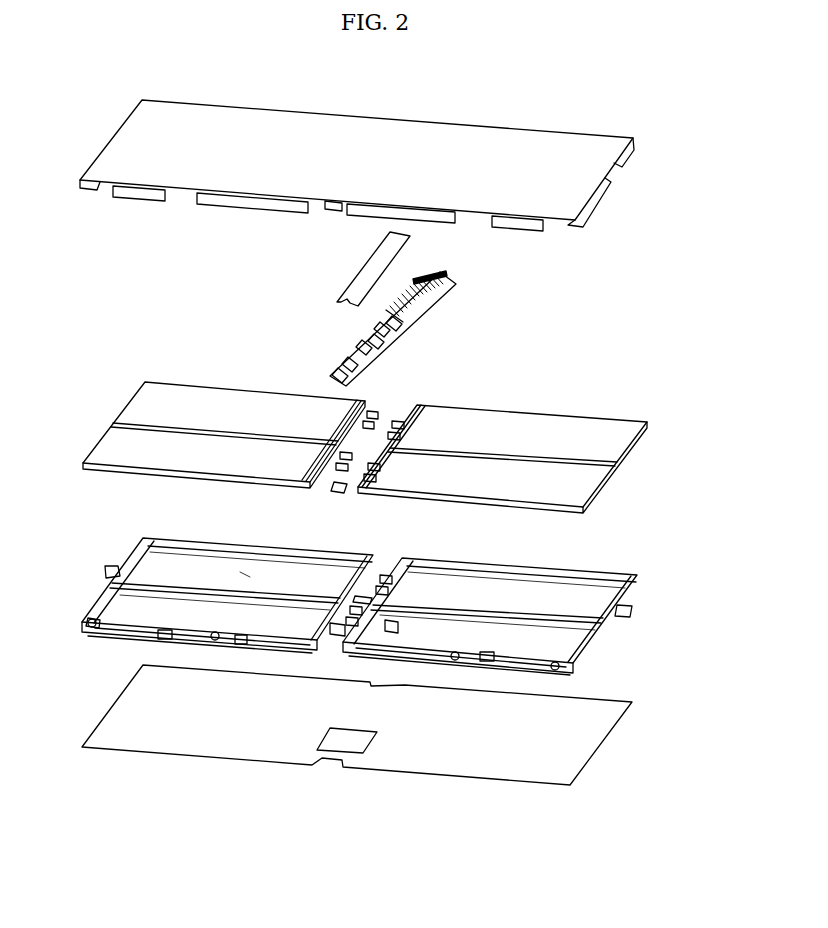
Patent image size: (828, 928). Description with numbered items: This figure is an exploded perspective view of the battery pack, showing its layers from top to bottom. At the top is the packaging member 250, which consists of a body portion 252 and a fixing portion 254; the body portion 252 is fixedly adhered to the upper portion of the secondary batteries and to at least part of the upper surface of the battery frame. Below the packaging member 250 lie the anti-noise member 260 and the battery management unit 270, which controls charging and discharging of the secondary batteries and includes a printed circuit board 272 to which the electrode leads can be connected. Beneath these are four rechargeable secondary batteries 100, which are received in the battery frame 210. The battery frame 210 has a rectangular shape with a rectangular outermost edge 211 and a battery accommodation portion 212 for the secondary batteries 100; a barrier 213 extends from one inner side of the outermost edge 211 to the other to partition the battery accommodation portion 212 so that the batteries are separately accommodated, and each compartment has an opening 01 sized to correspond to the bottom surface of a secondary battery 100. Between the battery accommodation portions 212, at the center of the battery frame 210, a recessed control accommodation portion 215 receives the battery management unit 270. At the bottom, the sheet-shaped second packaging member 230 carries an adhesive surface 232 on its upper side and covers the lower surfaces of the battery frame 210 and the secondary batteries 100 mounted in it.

The packaging member 250 is at (360, 173).
The body portion 252 is at (480, 137).
The fixing portion 254 is at (442, 219).
The anti-noise member 260 is at (370, 275).
The battery management unit 270 is at (390, 328).
The printed circuit board 272 is at (352, 372).
The secondary battery 100 is at (620, 443).
The battery frame 210 is at (371, 592).
The outermost edge 211 is at (287, 543).
The battery accommodation portion 212 is at (168, 572).
The barrier 213 is at (188, 585).
The opening 01 is at (247, 575).
The control accommodation portion 215 is at (360, 567).
The second packaging member 230 is at (379, 725).
The adhesive surface 232 is at (597, 736).